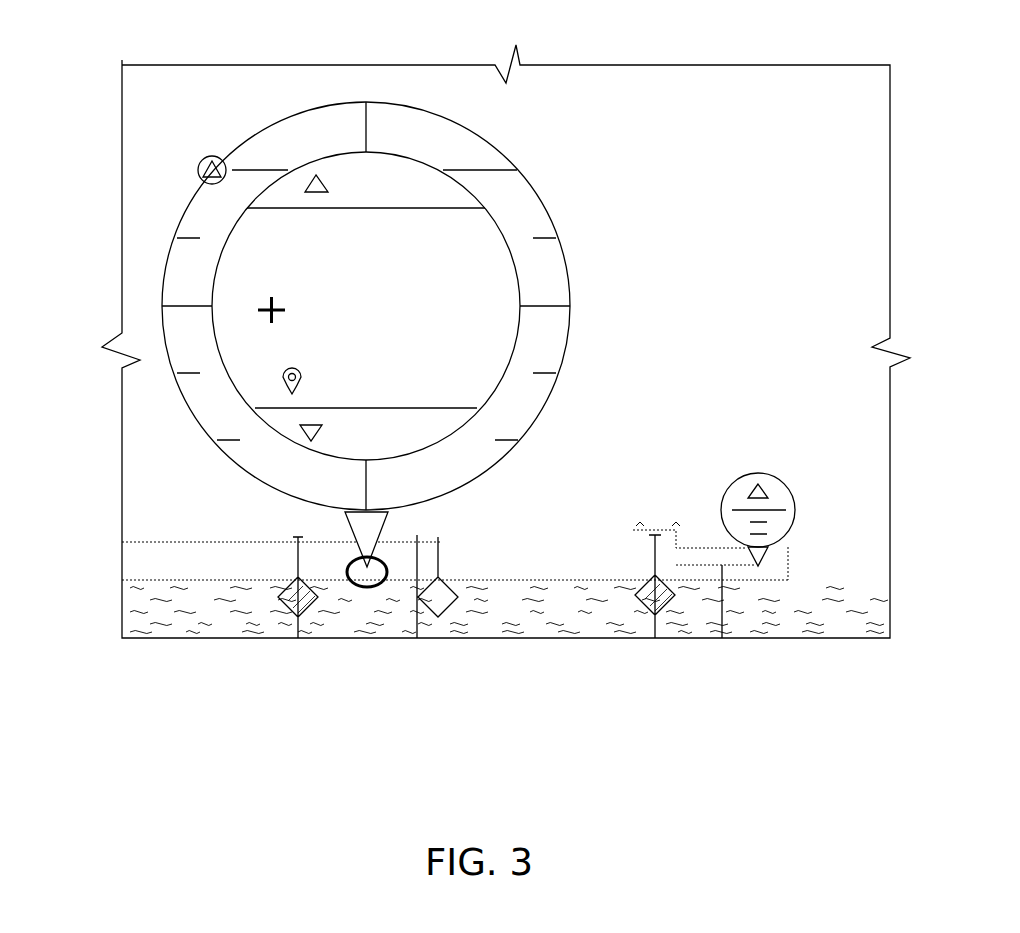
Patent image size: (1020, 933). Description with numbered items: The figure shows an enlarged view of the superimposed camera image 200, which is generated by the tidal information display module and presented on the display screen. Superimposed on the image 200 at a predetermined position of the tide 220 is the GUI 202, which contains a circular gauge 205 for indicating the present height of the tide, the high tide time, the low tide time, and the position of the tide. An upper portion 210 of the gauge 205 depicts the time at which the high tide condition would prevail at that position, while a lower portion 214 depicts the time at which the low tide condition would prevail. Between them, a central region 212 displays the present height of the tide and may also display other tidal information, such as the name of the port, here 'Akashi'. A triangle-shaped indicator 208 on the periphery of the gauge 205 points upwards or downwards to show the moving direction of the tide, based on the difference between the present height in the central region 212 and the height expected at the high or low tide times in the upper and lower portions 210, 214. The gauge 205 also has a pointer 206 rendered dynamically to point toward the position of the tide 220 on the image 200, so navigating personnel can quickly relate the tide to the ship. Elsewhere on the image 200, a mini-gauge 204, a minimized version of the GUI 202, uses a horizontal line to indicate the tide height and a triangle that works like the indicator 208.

The superimposed camera image 200 is at (168, 60).
The GUI 202 is at (368, 267).
The mini-gauge 204 is at (796, 494).
The gauge 205 is at (161, 282).
The pointer 206 is at (354, 528).
The triangle-shaped indicator 208 is at (191, 160).
The upper portion 210 is at (390, 165).
The central region 212 is at (477, 274).
The lower portion 214 is at (420, 425).
The tide 220 is at (363, 588).